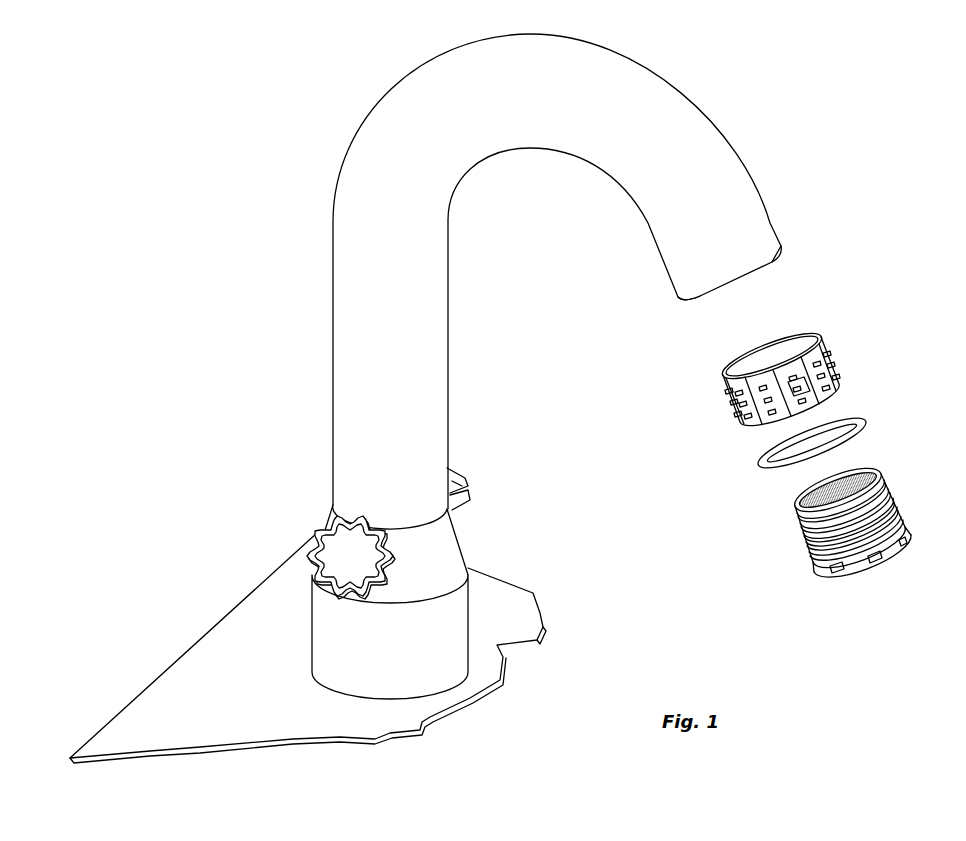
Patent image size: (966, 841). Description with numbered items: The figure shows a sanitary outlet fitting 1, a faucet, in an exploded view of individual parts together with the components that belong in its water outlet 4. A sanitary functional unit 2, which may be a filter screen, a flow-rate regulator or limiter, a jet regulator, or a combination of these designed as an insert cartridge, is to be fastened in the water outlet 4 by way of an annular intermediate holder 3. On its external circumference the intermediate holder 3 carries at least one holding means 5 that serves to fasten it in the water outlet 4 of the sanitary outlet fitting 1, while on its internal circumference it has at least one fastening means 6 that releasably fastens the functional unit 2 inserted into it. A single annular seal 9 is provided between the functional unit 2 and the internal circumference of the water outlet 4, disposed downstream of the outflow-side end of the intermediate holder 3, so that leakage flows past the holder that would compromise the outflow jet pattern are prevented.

The sanitary outlet fitting 1 is at (750, 113).
The sanitary functional unit 2 is at (903, 498).
The annular intermediate holder 3 is at (802, 358).
The water outlet 4 is at (770, 247).
The holding means 5 is at (842, 375).
The fastening means 6 is at (803, 390).
The annular seal 9 is at (868, 422).